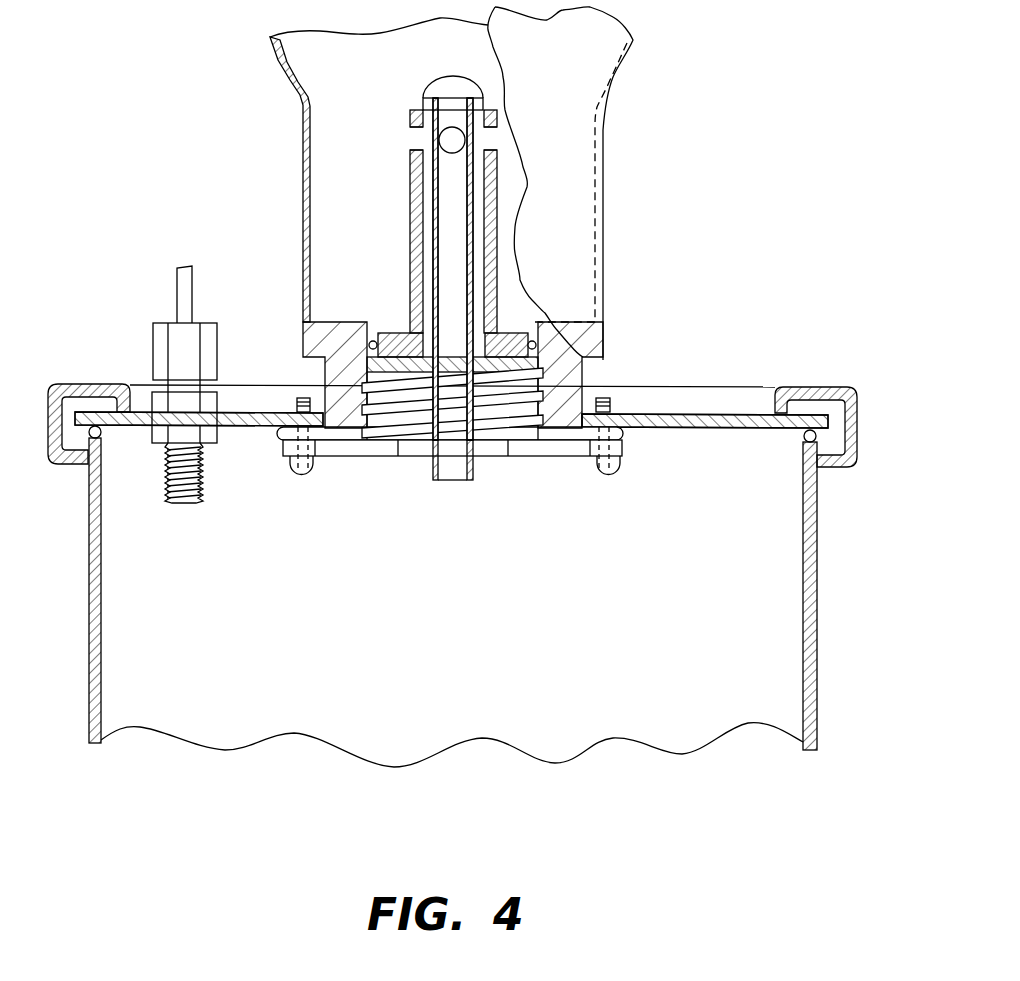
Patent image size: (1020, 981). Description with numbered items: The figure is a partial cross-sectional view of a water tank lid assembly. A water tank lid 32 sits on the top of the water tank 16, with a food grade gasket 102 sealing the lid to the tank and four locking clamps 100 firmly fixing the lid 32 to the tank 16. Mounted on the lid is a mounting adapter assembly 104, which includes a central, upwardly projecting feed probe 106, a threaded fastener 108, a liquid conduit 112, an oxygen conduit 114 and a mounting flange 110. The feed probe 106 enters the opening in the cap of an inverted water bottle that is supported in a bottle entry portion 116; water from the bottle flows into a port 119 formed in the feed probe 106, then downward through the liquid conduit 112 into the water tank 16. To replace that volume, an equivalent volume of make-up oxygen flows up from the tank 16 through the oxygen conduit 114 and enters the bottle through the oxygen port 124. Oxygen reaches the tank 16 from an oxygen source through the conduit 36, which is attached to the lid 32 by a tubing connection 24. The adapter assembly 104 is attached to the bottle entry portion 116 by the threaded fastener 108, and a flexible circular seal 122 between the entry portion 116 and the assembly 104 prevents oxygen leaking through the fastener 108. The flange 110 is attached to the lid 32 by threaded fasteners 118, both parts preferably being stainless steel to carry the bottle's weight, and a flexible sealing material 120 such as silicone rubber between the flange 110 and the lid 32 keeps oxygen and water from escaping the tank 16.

The water tank 16 is at (815, 522).
The tubing connection 24 is at (162, 337).
The water tank lid 32 is at (713, 417).
The conduit 36 is at (183, 303).
The locking clamps 100 is at (825, 392).
The food grade gasket 102 is at (808, 442).
The mounting adapter assembly 104 is at (557, 460).
The feed probe 106 is at (413, 193).
The threaded fastener 108 is at (382, 412).
The mounting flange 110 is at (350, 448).
The liquid conduit 112 is at (452, 468).
The oxygen conduit 114 is at (427, 247).
The bottle entry portion 116 is at (583, 270).
The threaded fasteners 118 is at (305, 397).
The port 119 is at (452, 138).
The flexible sealing material 120 is at (280, 432).
The flexible circular seal 122 is at (535, 347).
The oxygen port 124 is at (413, 143).